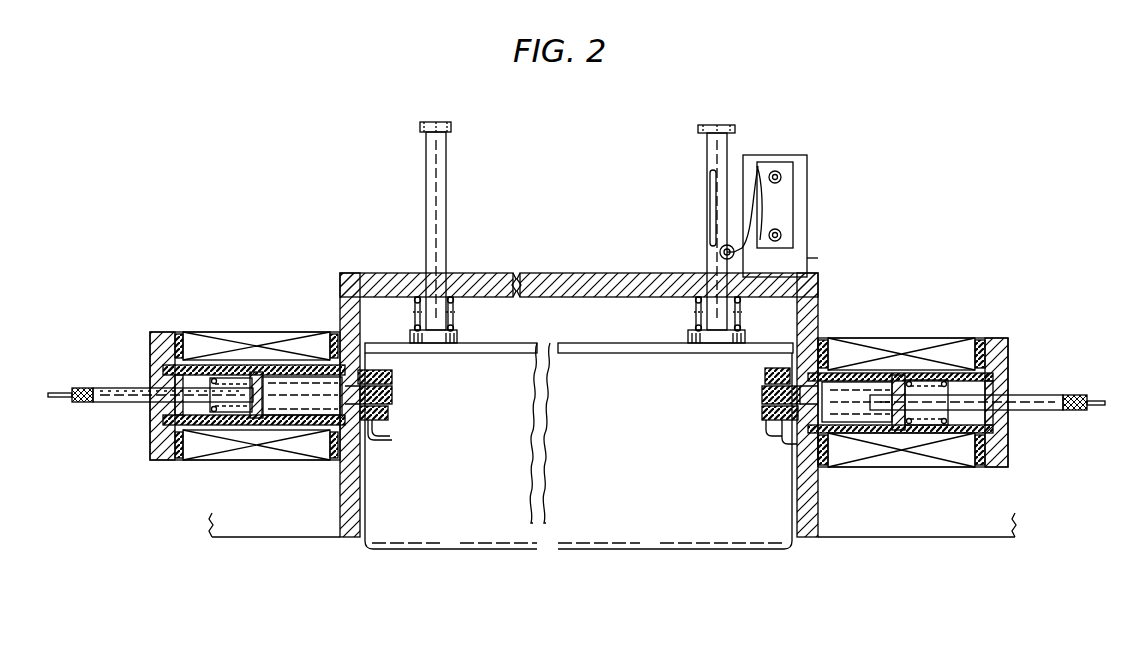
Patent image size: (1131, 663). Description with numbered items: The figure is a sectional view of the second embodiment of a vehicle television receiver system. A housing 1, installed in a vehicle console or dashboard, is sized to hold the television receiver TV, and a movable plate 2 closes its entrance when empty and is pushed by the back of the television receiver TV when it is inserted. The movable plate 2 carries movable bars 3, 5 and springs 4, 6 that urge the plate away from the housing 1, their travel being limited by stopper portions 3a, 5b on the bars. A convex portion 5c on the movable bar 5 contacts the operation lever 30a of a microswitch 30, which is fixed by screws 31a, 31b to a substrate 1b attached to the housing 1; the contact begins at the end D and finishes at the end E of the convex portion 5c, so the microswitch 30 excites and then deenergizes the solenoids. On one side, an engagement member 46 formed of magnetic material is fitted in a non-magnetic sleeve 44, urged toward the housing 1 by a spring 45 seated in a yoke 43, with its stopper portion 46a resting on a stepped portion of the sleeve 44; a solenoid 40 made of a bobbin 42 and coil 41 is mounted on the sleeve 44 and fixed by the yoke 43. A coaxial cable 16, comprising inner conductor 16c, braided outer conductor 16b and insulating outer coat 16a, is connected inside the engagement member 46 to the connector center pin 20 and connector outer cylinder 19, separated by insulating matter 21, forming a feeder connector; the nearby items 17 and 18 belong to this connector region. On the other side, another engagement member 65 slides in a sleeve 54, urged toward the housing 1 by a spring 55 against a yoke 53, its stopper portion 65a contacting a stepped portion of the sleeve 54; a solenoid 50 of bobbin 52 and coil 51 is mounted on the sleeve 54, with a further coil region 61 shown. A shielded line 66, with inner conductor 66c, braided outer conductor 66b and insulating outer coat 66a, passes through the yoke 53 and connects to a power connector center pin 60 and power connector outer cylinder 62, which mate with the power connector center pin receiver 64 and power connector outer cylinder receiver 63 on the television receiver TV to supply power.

The housing 1 is at (532, 285).
The substrate 1b is at (806, 258).
The movable plate 2 is at (582, 345).
The television receiver TV is at (430, 543).
The movable bar 3 is at (446, 178).
The stopper portion 3a is at (451, 124).
The spring 4 is at (450, 297).
The movable bar 5 is at (712, 270).
The stopper portion 5b is at (706, 125).
The convex portion 5c is at (712, 190).
The end of convex portion D is at (715, 170).
The end of convex portion E is at (717, 250).
The operation lever 30a is at (720, 254).
The spring 6 is at (742, 300).
The microswitch 30 is at (786, 198).
The screw 31a is at (780, 176).
The screw 31b is at (781, 234).
The solenoid 50 is at (305, 332).
The yoke 53 is at (165, 456).
The coil 51 is at (266, 342).
The lower coil 61 is at (322, 442).
The bobbin 52 is at (236, 364).
The sleeve 54 is at (190, 365).
The spring 55 is at (216, 428).
The stopper portion 65a is at (254, 420).
The engagement member 65 is at (281, 412).
The shielded line 66 is at (112, 404).
The insulating outer coat 66a is at (120, 380).
The outer conductor 66b is at (86, 388).
The inner conductor 66c is at (60, 393).
The power connector center pin 60 is at (392, 376).
The power connector center pin receiver 64 is at (392, 397).
The power connector outer cylinder receiver 63 is at (388, 418).
The power connector outer cylinder 62 is at (378, 438).
The right nozzle outer ring 17 is at (764, 373).
The right nozzle body 18 is at (762, 396).
The connector outer cylinder 19 is at (764, 414).
The connector center pin 20 is at (772, 432).
The insulating matter 21 is at (792, 446).
The solenoid 40 is at (860, 338).
The yoke 43 is at (996, 460).
The coil 41 is at (896, 346).
The non-magnetic sleeve 44 is at (852, 440).
The bobbin 42 is at (928, 372).
The spring 45 is at (940, 372).
The engagement member 46 is at (882, 418).
The stopper portion 46a is at (900, 428).
The coaxial cable 16 is at (1030, 394).
The insulating outer coat 16a is at (1055, 395).
The outer conductor 16b is at (1078, 394).
The inner conductor 16c is at (1098, 408).